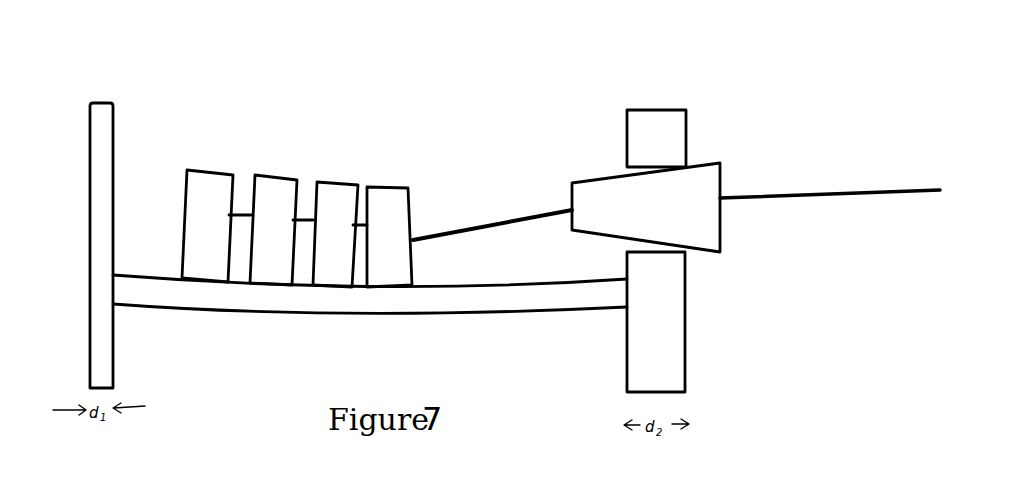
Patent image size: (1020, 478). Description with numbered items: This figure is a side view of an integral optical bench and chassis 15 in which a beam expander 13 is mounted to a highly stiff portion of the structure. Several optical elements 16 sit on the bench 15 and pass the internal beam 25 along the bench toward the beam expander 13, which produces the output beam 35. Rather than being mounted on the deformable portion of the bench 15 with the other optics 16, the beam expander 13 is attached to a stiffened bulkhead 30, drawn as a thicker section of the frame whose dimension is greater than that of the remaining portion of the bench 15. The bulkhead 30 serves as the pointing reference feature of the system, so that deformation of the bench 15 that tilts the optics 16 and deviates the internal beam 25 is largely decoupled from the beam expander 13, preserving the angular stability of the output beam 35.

The beam expander 13 is at (597, 178).
The optical bench 15 is at (360, 318).
The optical elements 16 is at (220, 172).
The internal beam 25 is at (493, 215).
The stiffened bulkhead 30 is at (687, 128).
The output beam 35 is at (803, 188).